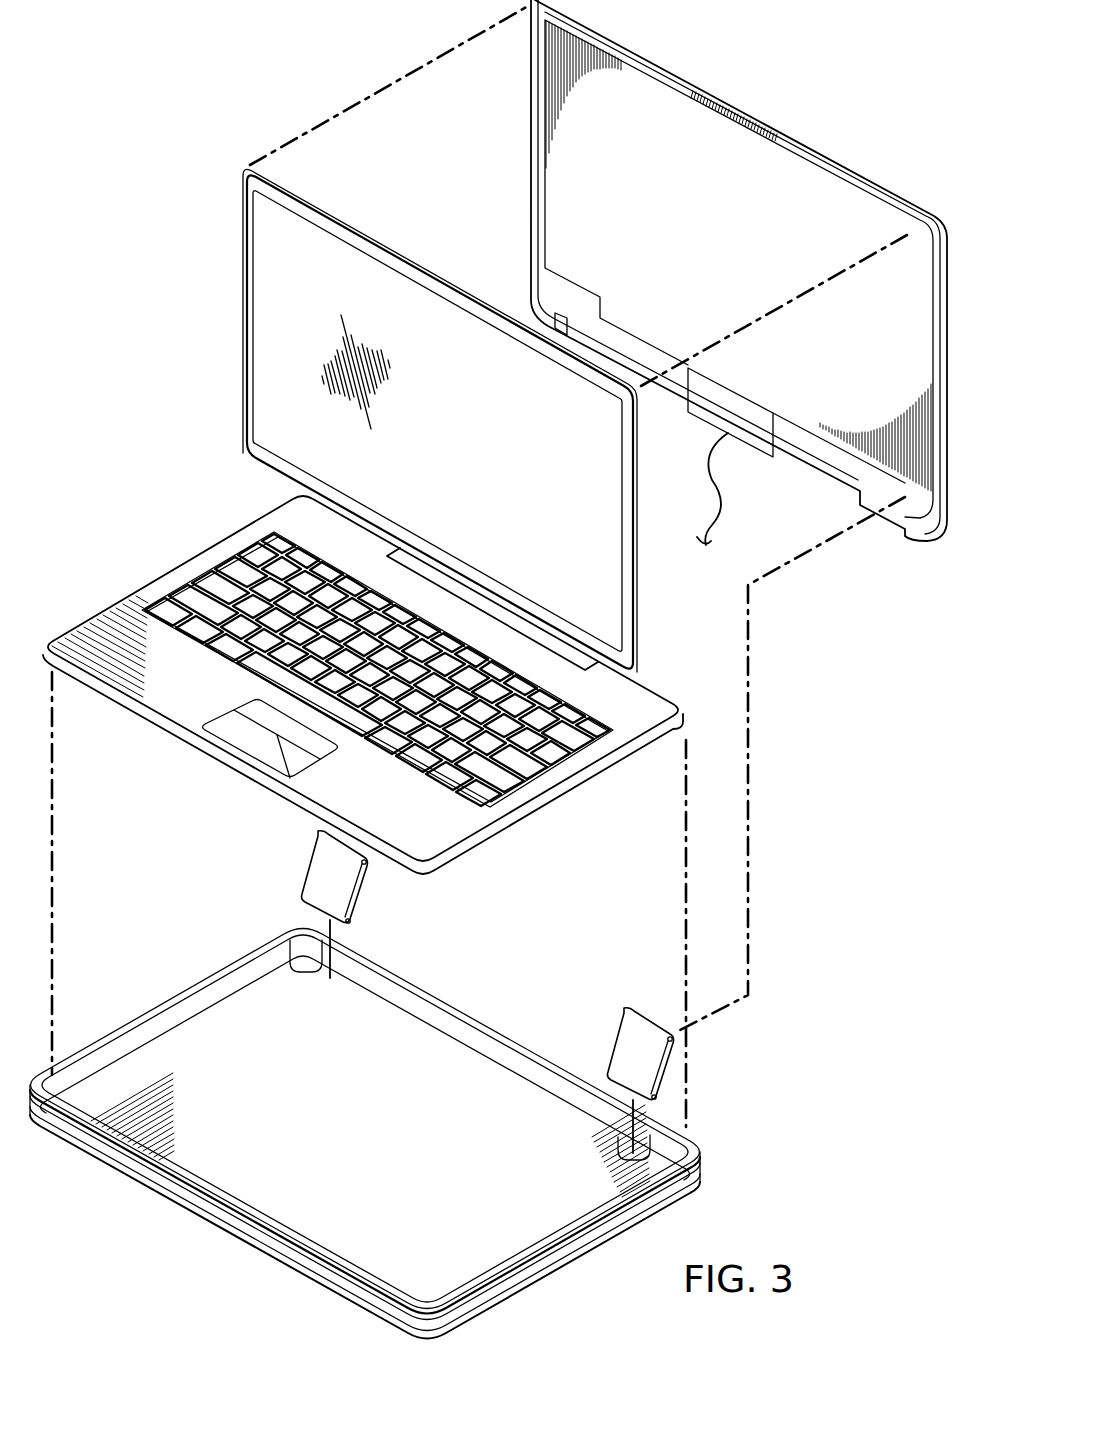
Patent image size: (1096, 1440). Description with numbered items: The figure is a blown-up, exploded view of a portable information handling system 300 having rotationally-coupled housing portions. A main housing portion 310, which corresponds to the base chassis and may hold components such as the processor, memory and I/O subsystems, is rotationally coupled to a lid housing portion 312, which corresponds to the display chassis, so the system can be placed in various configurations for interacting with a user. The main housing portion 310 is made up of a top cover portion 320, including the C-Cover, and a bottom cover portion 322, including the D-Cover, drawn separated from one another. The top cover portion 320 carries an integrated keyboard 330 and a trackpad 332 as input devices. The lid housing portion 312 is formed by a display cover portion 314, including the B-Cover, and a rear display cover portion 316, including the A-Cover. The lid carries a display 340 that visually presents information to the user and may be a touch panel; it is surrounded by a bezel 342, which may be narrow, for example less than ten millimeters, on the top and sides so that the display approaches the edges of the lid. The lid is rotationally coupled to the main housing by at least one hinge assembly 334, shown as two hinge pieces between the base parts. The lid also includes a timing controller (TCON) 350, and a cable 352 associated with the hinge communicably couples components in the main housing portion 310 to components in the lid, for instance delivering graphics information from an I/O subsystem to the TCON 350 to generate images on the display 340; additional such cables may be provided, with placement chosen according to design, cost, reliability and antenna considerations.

The portable information handling system 300 is at (163, 110).
The main housing portion 310 is at (87, 552).
The lid housing portion 312 is at (328, 62).
The display cover portion 314 is at (243, 380).
The rear display cover portion 316 is at (748, 97).
The top cover portion 320 is at (141, 714).
The bottom cover portion 322 is at (245, 1222).
The integrated keyboard 330 is at (200, 582).
The trackpad 332 is at (262, 735).
The hinge assembly 334 is at (310, 870).
The display 340 is at (488, 481).
The bezel 342 is at (240, 290).
The timing controller (TCON) 350 is at (755, 415).
The cable 352 is at (735, 498).